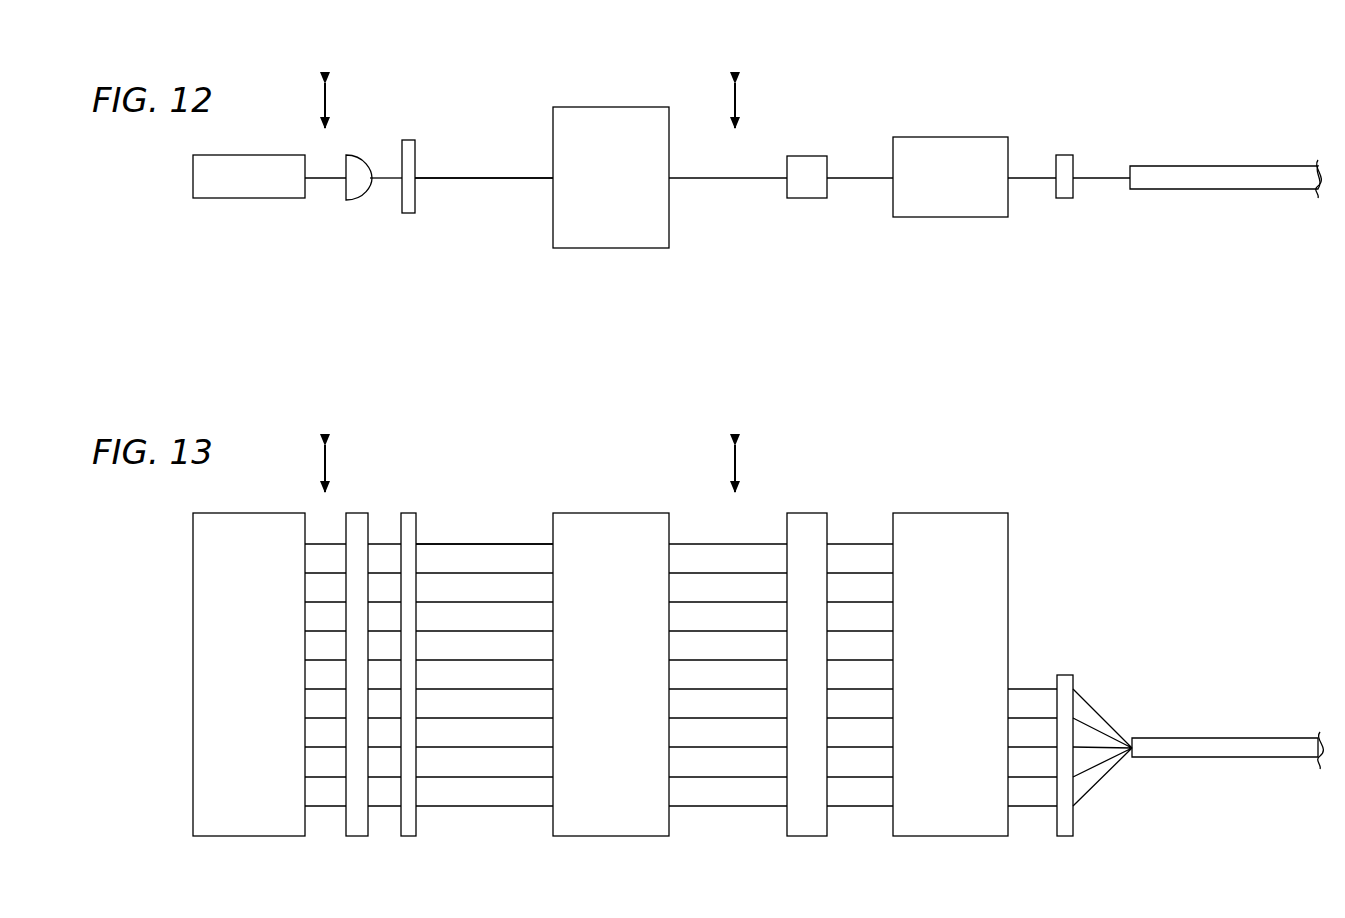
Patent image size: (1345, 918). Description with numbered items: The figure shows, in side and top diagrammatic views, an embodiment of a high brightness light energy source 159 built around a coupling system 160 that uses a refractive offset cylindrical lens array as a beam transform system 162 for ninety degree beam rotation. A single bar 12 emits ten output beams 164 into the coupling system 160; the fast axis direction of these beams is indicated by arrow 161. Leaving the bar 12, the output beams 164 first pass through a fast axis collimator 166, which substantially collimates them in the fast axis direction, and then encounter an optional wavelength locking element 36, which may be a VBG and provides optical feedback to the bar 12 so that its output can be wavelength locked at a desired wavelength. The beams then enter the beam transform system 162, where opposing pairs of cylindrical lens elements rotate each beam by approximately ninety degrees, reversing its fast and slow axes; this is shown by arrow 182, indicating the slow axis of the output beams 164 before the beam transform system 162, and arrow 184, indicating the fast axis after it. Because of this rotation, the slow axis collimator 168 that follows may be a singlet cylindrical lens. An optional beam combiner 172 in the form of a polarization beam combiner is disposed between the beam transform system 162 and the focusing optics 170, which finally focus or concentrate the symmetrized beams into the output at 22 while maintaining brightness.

In FIG. 12, the bar 12 is at (250, 198).
In FIG. 13, the bar 12 is at (258, 613).
In FIG. 12, the optical fiber 22 is at (1225, 189).
In FIG. 13, the optical fiber 22 is at (1226, 738).
In FIG. 12, the wavelength locking element 36 is at (409, 213).
In FIG. 13, the wavelength locking element 36 is at (408, 836).
In FIG. 12, the high brightness light energy source 159 is at (444, 42).
In FIG. 13, the high brightness light energy source 159 is at (456, 852).
In FIG. 12, the coupling system 160 is at (816, 68).
In FIG. 13, the coupling system 160 is at (637, 448).
In FIG. 12, the arrow 161 is at (333, 108).
In FIG. 12, the beam transform system 162 is at (612, 107).
In FIG. 13, the beam transform system 162 is at (611, 836).
In FIG. 12, the output beams 164 is at (485, 178).
In FIG. 13, the output beams 164 is at (411, 513).
In FIG. 12, the fast axis collimator 166 is at (355, 200).
In FIG. 13, the fast axis collimator 166 is at (356, 513).
In FIG. 12, the slow axis collimator 168 is at (807, 198).
In FIG. 13, the slow axis collimator 168 is at (806, 513).
In FIG. 12, the focusing optics 170 is at (1063, 155).
In FIG. 13, the focusing optics 170 is at (1068, 675).
In FIG. 12, the beam combiner 172 is at (951, 217).
In FIG. 13, the beam combiner 172 is at (950, 513).
In FIG. 13, the arrow 182 is at (324, 467).
In FIG. 13, the arrow 184 is at (737, 468).